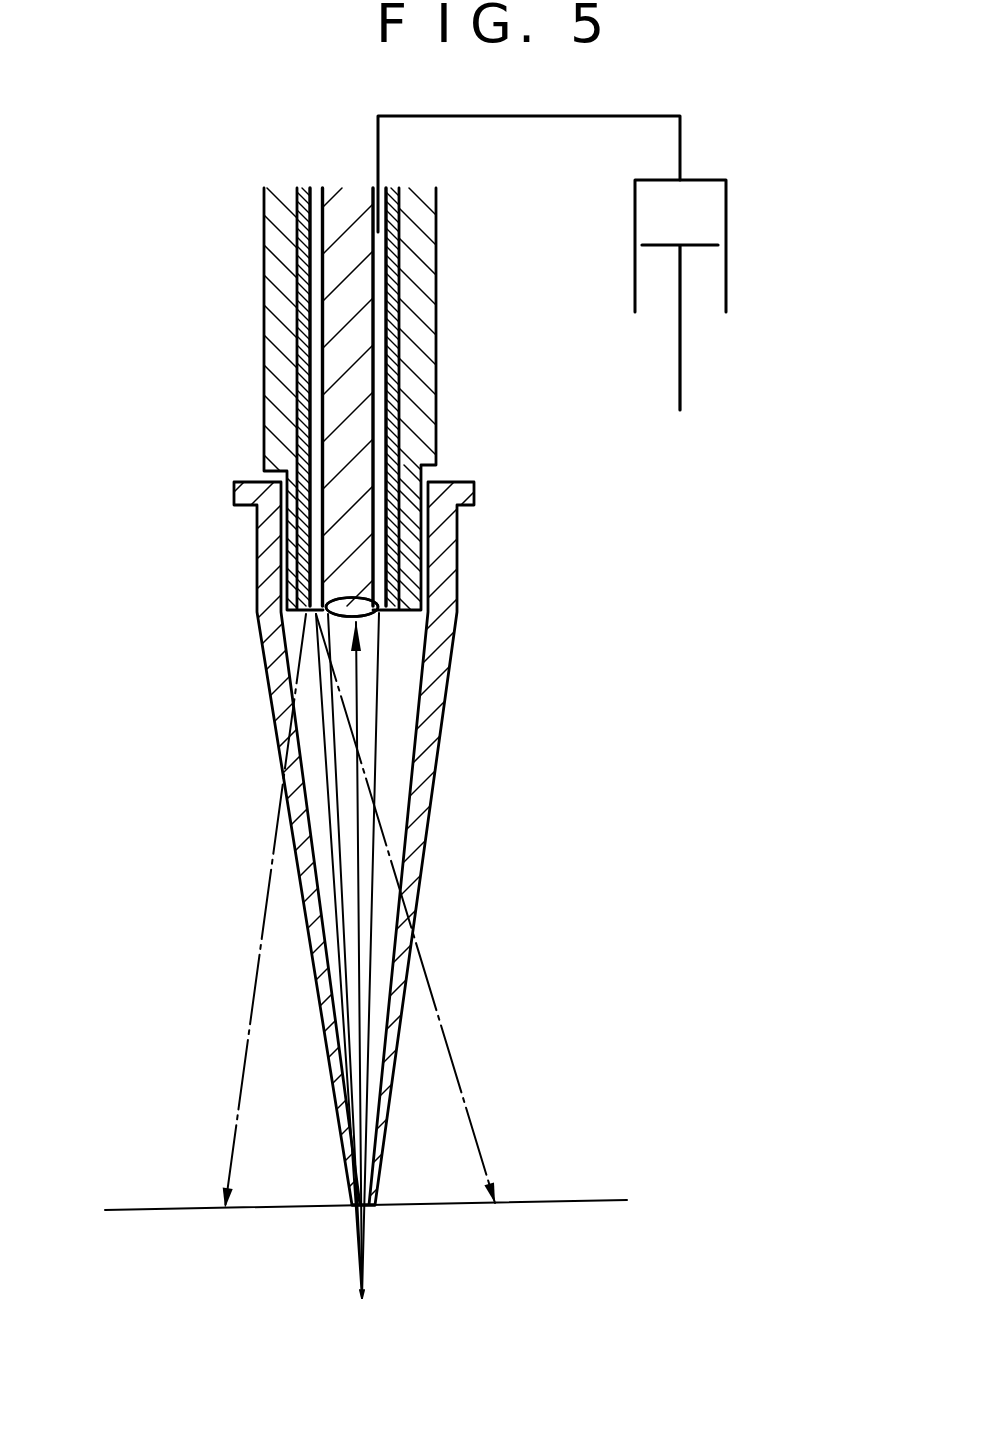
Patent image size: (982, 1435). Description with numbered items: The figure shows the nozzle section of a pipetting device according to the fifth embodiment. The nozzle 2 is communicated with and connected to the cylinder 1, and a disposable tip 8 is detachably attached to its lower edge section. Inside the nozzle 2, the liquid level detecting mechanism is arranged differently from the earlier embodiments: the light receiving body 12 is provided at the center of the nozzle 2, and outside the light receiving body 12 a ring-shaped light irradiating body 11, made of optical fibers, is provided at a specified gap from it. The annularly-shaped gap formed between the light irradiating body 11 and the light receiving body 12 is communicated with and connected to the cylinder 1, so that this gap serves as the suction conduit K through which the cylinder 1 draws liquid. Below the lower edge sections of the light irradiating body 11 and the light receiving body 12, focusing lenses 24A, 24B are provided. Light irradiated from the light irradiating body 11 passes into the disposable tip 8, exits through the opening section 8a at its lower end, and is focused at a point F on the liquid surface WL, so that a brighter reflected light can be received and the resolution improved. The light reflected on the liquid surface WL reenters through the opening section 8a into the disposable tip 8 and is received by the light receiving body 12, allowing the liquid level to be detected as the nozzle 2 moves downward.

The cylinder 1 is at (727, 226).
The nozzle 2 is at (268, 293).
The disposable tip 8 is at (428, 760).
The opening section 8a is at (358, 1209).
The light irradiating body 11 is at (397, 247).
The light receiving body 12 is at (361, 368).
The focusing lens 24A is at (356, 606).
The focusing lens 24B is at (352, 607).
The suction conduit K is at (317, 208).
The liquid surface WL is at (475, 1197).
The focus point F is at (363, 1297).